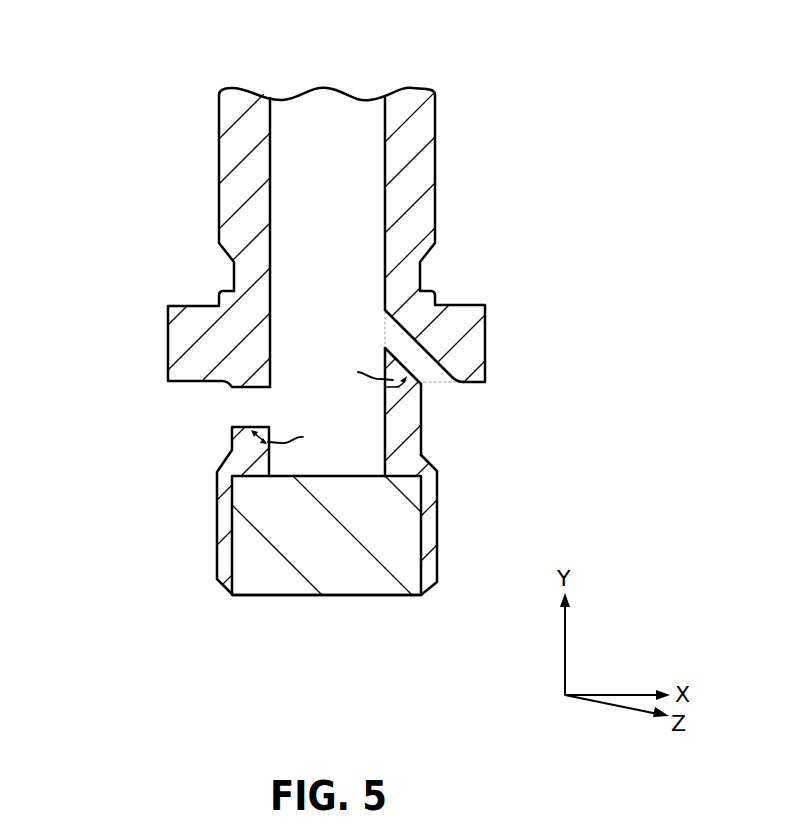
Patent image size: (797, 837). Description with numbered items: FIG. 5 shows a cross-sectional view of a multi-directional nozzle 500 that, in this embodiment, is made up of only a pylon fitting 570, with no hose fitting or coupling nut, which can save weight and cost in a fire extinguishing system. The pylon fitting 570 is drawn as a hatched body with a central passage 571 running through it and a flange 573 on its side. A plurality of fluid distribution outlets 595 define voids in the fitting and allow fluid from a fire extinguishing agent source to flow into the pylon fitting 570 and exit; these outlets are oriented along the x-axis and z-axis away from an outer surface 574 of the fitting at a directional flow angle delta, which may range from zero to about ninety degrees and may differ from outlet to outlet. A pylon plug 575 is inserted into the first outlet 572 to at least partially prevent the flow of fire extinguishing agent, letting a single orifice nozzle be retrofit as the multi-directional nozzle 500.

The multi-directional nozzle 500 is at (136, 45).
The pylon fitting 570 is at (226, 200).
The central bore 571 is at (341, 100).
The first outlet 572 is at (222, 518).
The flange 573 is at (181, 335).
The outer surface 574 is at (438, 510).
The pylon plug 575 is at (331, 573).
The fluid distribution outlets 595 is at (427, 375).